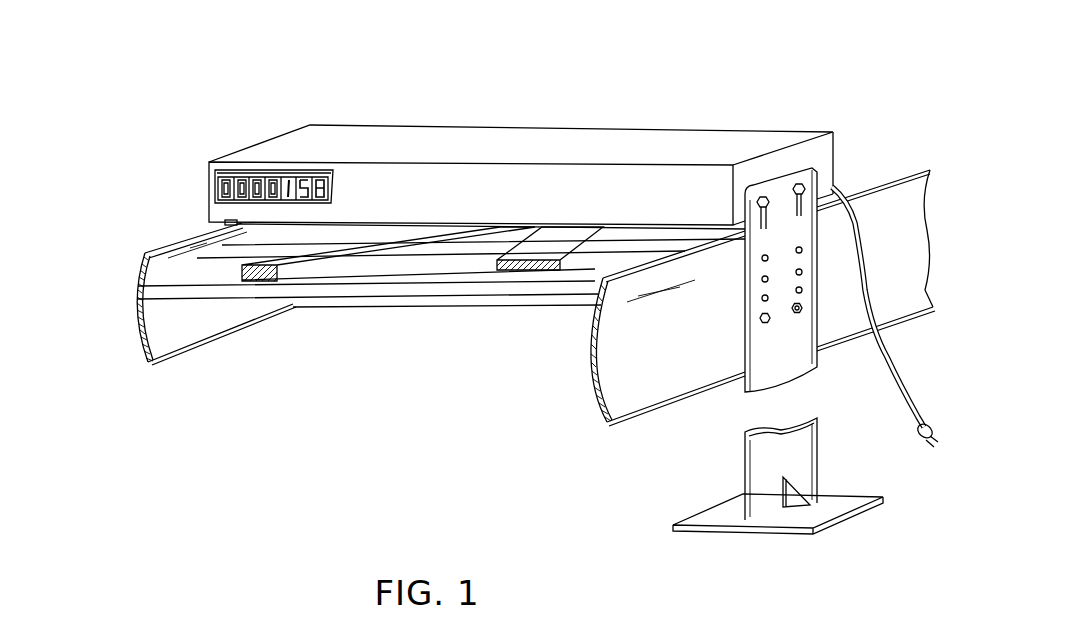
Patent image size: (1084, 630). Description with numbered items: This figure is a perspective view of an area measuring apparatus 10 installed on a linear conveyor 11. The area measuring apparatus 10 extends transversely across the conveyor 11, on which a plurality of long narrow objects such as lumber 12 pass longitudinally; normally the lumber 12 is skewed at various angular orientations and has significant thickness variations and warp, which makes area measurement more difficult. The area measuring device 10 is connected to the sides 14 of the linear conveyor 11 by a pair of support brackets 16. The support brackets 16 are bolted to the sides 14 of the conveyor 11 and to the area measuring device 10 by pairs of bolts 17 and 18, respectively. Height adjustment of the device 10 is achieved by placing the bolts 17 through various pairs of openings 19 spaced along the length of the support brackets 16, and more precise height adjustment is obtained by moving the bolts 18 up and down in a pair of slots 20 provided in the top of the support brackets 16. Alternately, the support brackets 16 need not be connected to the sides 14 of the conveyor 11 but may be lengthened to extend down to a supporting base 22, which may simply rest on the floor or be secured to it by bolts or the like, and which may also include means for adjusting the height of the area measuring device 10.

The area measuring apparatus 10 is at (473, 199).
The linear conveyor 11 is at (393, 322).
The lumber 12 is at (377, 254).
The sides 14 is at (135, 312).
The support brackets 16 is at (770, 364).
The bolts 17 is at (865, 306).
The bolts 18 is at (764, 197).
The openings 19 is at (802, 272).
The slots 20 is at (835, 186).
The supporting base 22 is at (780, 518).